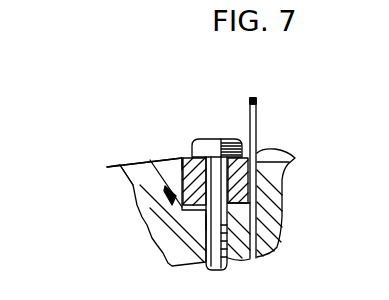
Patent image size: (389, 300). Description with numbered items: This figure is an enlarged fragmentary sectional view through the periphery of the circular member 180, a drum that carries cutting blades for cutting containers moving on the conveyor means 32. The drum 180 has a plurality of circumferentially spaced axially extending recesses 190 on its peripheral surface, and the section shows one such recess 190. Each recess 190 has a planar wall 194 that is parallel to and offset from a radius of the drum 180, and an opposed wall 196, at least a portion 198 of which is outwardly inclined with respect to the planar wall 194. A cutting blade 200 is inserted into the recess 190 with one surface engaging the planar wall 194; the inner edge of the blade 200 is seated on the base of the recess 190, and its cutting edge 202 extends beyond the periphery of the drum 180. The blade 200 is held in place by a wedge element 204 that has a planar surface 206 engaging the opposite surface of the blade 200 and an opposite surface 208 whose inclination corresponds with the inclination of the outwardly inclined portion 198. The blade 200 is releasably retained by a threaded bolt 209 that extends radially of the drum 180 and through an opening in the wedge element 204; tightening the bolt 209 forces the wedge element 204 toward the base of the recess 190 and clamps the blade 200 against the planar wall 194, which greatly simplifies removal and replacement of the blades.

The conveyor means 32 is at (15, 0).
The circular member 180 is at (132, 186).
The axially extending recess 190 is at (151, 164).
The planar wall 194 is at (294, 164).
The opposed wall 196 is at (166, 190).
The outwardly inclined portion 198 is at (182, 153).
The cutting blade 200 is at (258, 114).
The cutting edge 202 is at (252, 97).
The wedge element 204 is at (257, 223).
The planar surface 206 is at (262, 196).
The opposite surface 208 is at (182, 207).
The bolt 209 is at (210, 218).